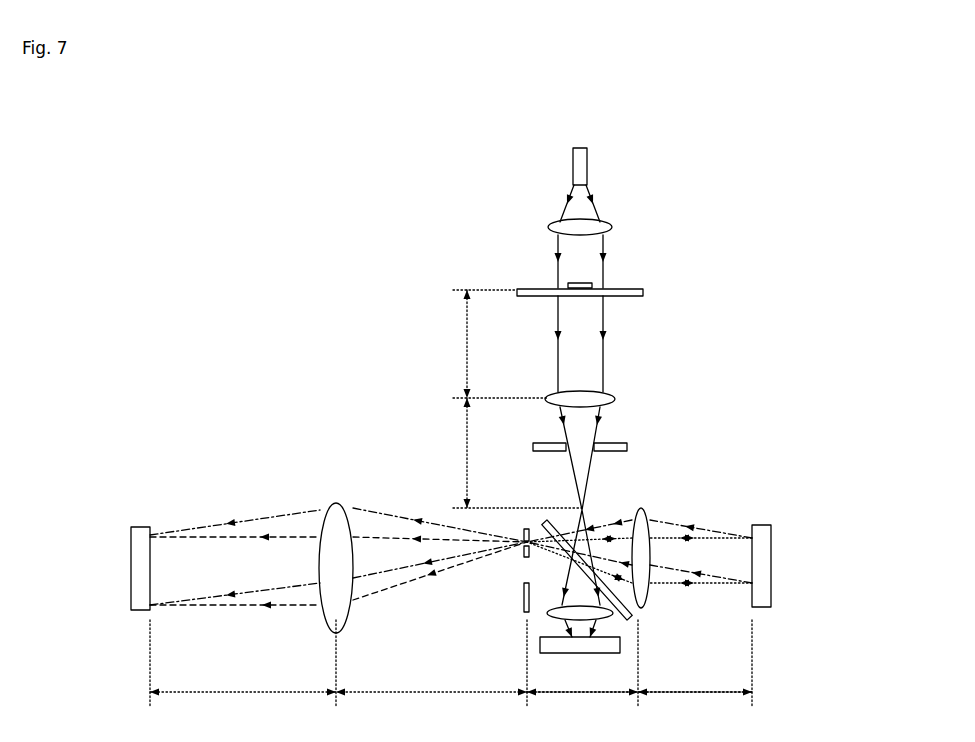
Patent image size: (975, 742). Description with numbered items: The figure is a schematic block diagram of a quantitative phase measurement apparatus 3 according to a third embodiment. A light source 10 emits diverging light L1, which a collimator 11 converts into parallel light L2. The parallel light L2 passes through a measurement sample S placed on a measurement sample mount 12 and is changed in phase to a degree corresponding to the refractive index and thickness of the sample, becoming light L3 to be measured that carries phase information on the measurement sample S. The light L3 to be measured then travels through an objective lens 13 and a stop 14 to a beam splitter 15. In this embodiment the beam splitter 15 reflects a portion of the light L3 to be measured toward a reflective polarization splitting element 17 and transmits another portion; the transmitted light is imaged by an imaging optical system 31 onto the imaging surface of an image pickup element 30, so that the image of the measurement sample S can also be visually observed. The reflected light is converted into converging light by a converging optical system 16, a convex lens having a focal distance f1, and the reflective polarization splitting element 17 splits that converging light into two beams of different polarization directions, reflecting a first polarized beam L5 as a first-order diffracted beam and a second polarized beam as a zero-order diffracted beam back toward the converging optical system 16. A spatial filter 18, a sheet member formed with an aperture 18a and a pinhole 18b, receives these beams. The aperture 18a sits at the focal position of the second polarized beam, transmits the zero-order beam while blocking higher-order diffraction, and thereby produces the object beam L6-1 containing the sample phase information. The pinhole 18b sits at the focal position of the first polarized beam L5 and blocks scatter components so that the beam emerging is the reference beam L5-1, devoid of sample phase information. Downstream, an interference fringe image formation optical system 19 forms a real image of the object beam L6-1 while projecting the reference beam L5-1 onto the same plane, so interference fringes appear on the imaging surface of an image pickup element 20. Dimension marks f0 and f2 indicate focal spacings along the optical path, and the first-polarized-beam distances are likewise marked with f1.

The quantitative phase measurement apparatus 3 is at (684, 131).
The light source 10 is at (588, 158).
The diverging light L1 is at (592, 200).
The collimator 11 is at (612, 226).
The parallel light L2 is at (604, 250).
The measurement sample S is at (580, 283).
The measurement sample mount 12 is at (643, 292).
The light to be measured L3 is at (605, 315).
The objective lens 13 is at (616, 399).
The stop 14 is at (627, 447).
The beam splitter 15 is at (633, 614).
The converging optical system 16 is at (643, 510).
The reflective polarization splitting element 17 is at (762, 525).
The spatial filter 18 is at (520, 606).
The aperture 18a is at (518, 592).
The pinhole 18b is at (522, 542).
The interference fringe image formation optical system 19 is at (337, 503).
The image pickup element 20 is at (143, 527).
The image pickup element 30 is at (582, 653).
The imaging optical system 31 is at (612, 615).
The first polarized beam L5 is at (678, 520).
The reference beam L5-1 is at (373, 513).
The object beam L6-1 is at (372, 595).
The focal length f0 is at (511, 399).
The focal distance f1 is at (639, 709).
The focal length f2 is at (451, 673).